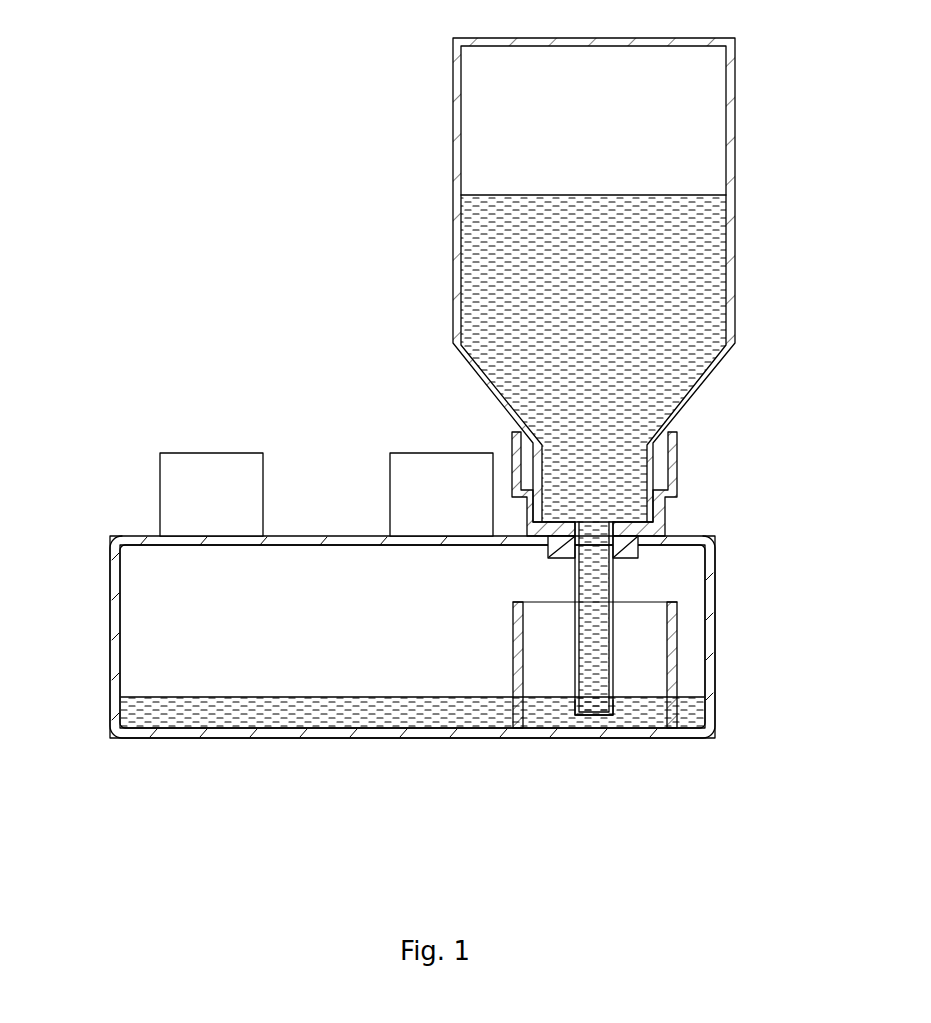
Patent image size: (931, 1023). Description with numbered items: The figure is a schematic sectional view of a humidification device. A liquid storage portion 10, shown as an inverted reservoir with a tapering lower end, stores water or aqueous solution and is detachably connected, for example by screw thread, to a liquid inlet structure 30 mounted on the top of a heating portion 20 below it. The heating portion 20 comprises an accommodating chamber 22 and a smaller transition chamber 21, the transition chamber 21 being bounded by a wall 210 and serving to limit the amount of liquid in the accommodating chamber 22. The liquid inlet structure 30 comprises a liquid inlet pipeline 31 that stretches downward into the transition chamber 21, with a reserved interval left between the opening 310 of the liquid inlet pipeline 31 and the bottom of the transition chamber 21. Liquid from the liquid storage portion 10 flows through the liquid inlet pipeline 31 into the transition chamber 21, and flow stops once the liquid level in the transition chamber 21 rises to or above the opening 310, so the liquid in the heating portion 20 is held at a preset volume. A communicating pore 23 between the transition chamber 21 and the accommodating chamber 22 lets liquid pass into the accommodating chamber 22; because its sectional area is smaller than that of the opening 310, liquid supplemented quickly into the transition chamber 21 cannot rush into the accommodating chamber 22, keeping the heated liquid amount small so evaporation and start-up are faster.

The liquid storage portion 10 is at (703, 117).
The heating portion 20 is at (435, 627).
The transition chamber 21 is at (505, 627).
The accommodating chamber 22 is at (148, 617).
The communicating pore 23 is at (670, 703).
The liquid inlet structure 30 is at (673, 482).
The liquid inlet pipeline 31 is at (685, 670).
The wall of the transition chamber 210 is at (520, 703).
The opening of the liquid inlet pipeline 310 is at (578, 697).